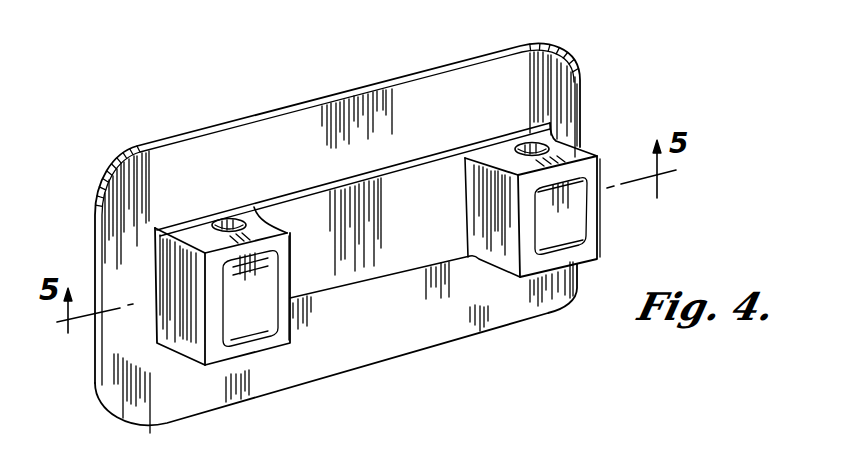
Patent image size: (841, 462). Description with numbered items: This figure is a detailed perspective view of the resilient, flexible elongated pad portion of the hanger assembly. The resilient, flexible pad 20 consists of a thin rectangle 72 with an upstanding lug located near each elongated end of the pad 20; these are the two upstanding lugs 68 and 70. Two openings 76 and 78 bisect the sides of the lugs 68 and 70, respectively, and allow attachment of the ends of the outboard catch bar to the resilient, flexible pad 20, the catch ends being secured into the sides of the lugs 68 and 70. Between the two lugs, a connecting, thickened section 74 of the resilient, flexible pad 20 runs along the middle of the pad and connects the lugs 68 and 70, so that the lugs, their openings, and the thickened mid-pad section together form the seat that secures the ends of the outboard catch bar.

The resilient, flexible pad 20 is at (305, 123).
The upstanding lug 68 is at (227, 310).
The upstanding lug 70 is at (572, 215).
The thin rectangle 72 is at (343, 353).
The connecting, thickened section 74 is at (412, 250).
The opening 76 is at (242, 218).
The opening 78 is at (537, 143).